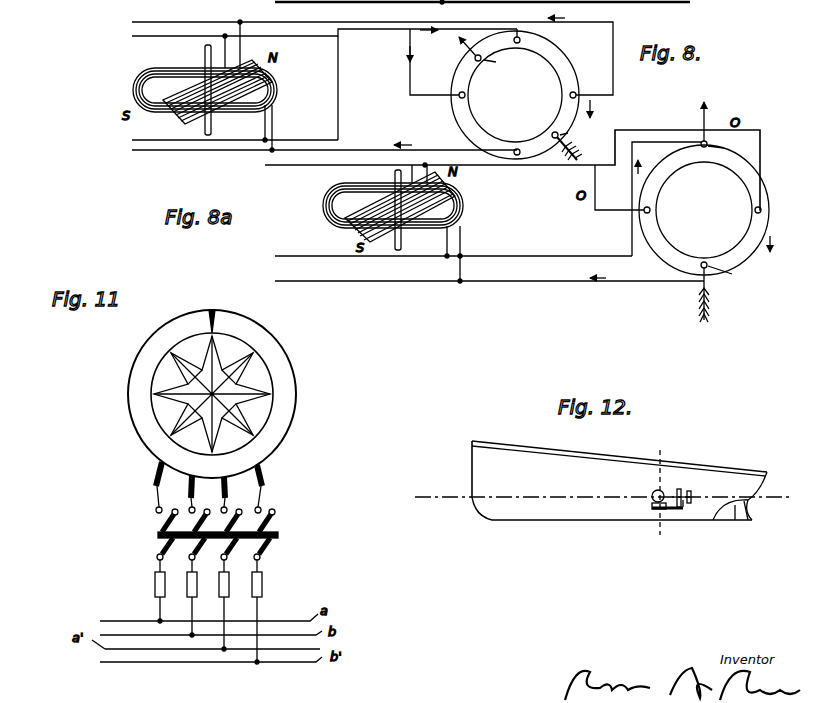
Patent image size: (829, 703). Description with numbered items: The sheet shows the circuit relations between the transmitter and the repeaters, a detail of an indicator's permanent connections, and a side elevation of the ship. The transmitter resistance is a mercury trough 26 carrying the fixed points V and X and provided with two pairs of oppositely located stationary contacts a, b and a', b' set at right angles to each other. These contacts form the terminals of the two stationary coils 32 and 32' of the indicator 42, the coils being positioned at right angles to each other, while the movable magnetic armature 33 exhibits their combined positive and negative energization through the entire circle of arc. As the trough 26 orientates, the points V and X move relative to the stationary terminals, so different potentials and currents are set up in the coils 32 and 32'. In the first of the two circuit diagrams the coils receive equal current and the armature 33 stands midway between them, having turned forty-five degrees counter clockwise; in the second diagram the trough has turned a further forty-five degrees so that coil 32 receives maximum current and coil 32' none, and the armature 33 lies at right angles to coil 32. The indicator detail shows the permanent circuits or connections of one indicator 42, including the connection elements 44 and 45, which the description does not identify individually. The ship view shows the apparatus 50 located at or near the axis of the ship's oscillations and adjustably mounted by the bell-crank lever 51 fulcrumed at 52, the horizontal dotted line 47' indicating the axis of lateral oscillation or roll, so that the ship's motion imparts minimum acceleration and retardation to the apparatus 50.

In FIG. 8, the stationary coil 32 is at (200, 86).
In FIG. 8A, the stationary coil 32 is at (384, 223).
In FIG. 8, the stationary coil 32' is at (215, 99).
In FIG. 8A, the stationary coil 32' is at (385, 209).
In FIG. 8, the movable magnetic armature 33 is at (158, 112).
In FIG. 8A, the movable magnetic armature 33 is at (412, 230).
In FIG. 8, the mercury trough 26 is at (516, 95).
In FIG. 8A, the mercury trough 26 is at (704, 212).
In FIG. 11, the indicator 42 is at (192, 411).
In FIG. 11, the contact bar 44 is at (231, 534).
In FIG. 11, the resistances 45 is at (204, 612).
In FIG. 12, the horizontal dotted line 47' is at (619, 480).
In FIG. 12, the apparatus 50 is at (687, 489).
In FIG. 12, the bell-crank lever 51 is at (666, 512).
In FIG. 12, the fulcrum 52 is at (683, 503).